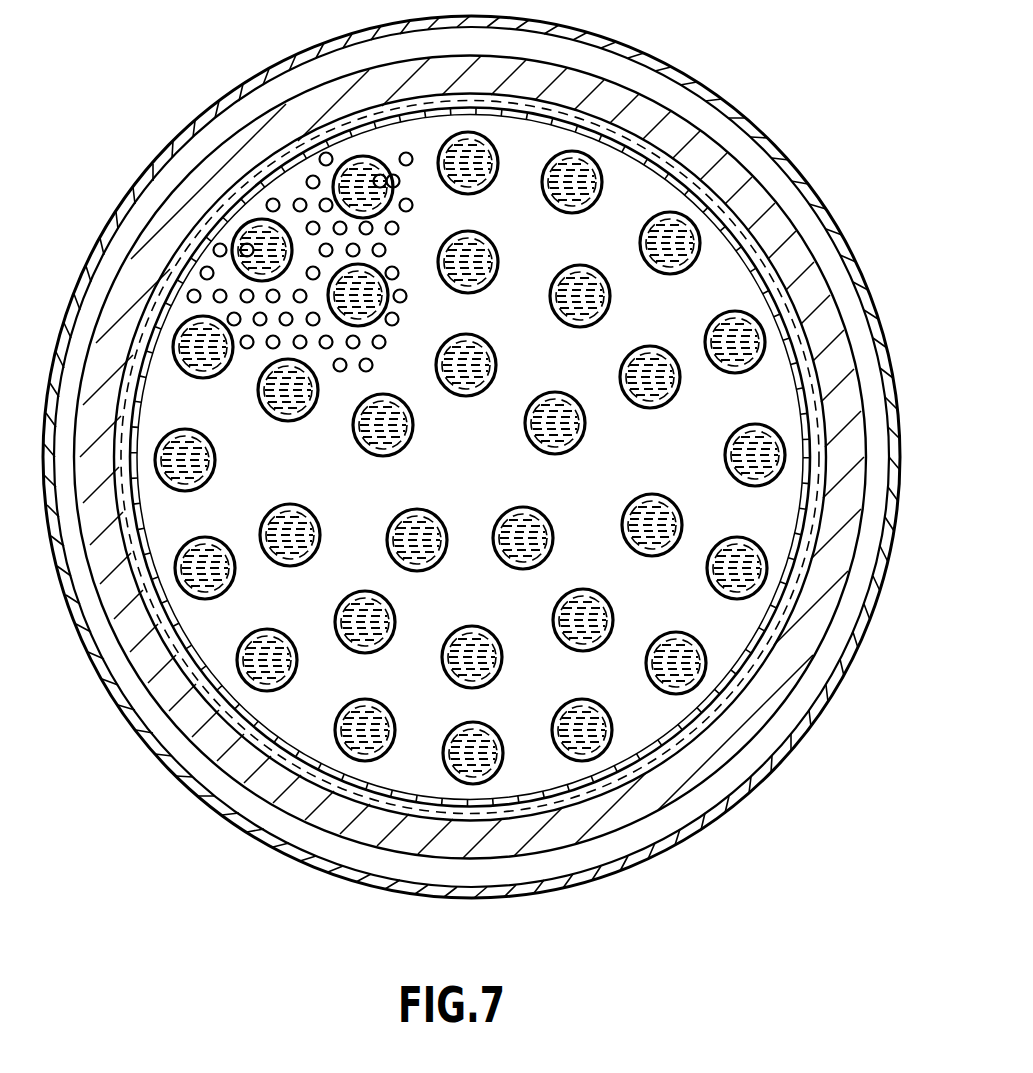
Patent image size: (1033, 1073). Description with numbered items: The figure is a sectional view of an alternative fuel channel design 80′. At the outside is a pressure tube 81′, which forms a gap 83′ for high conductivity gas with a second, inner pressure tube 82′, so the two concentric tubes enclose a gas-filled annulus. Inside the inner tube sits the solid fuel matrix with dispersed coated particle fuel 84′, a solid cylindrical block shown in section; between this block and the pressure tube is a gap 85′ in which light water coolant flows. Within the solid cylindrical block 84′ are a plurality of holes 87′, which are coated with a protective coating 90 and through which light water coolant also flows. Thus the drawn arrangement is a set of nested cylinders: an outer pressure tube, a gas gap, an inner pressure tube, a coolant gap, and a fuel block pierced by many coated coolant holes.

The alternative fuel channel design 80′ is at (758, 98).
The pressure tube 81′ is at (662, 63).
The pressure tube 82′ is at (180, 204).
The gap 83′ is at (702, 804).
The solid fuel matrix with dispersed coated particle fuel 84′ is at (384, 350).
The gap 85′ is at (138, 530).
The holes 87′ is at (556, 392).
The protective coating 90 is at (719, 318).